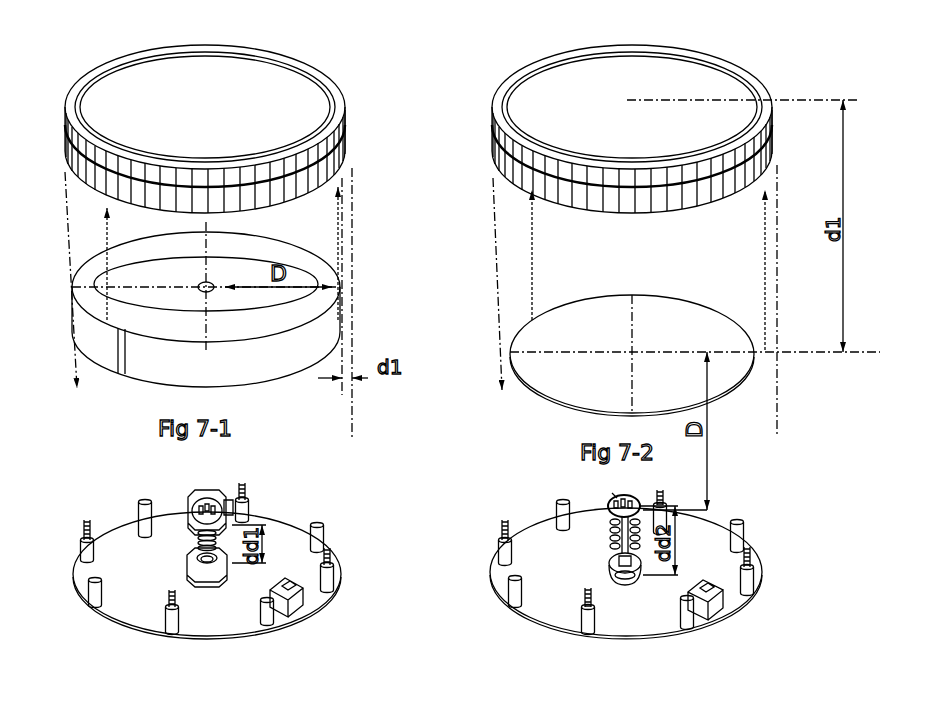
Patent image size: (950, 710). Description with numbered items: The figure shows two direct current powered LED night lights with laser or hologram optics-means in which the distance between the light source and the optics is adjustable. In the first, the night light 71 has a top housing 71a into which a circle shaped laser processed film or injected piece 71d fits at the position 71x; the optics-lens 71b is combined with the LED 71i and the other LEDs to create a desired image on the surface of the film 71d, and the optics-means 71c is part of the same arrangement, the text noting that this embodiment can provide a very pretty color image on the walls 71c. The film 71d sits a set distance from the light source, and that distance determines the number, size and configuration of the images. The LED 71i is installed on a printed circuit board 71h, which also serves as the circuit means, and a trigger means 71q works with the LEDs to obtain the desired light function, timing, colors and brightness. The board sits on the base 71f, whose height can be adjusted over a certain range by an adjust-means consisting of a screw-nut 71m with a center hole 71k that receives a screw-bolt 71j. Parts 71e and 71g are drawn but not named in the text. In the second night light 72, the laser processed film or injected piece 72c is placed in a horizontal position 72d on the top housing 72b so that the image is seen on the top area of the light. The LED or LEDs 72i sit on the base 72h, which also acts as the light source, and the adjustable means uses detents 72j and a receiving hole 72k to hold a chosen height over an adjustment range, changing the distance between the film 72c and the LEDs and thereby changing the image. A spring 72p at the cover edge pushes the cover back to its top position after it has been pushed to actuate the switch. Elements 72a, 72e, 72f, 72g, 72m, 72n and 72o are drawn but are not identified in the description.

In FIG. 7-1, the direct current operated LED night light 71 is at (195, 67).
In FIG. 7-1, the top housing 71a is at (107, 70).
In FIG. 7-1, the optics-lens 71b is at (248, 95).
In FIG. 7-1, the optics-means 71c is at (325, 157).
In FIG. 7-1, the position 71x is at (137, 173).
In FIG. 7-1, the laser processed film or injected piece 71d is at (292, 240).
In FIG. 7-1, the post 71e is at (268, 612).
In FIG. 7-1, the base 71f is at (183, 498).
In FIG. 7-1, the bracket 71g is at (233, 514).
In FIG. 7-1, the printed circuit board 71h is at (208, 495).
In FIG. 7-1, the LED 71i is at (236, 503).
In FIG. 7-1, the screw-bolt 71j is at (192, 545).
In FIG. 7-1, the center hole 71k is at (220, 563).
In FIG. 7-1, the screw-nut 71m is at (192, 572).
In FIG. 7-1, the trigger means 71q is at (300, 603).
In FIG. 7-2, the DC powered night light 72 is at (620, 65).
In FIG. 7-2, the cap rim 72a is at (528, 72).
In FIG. 7-2, the top housing 72b is at (764, 90).
In FIG. 7-2, the laser processed film or injected piece 72c is at (527, 107).
In FIG. 7-2, the horizontal position 72d is at (497, 167).
In FIG. 7-2, the disk 72e is at (757, 368).
In FIG. 7-2, the base plate 72f is at (627, 627).
In FIG. 7-2, the contact head 72g is at (640, 500).
In FIG. 7-2, the base 72h is at (608, 505).
In FIG. 7-2, the LED 72i is at (611, 493).
In FIG. 7-2, the detents 72j is at (646, 523).
In FIG. 7-2, the receiving hole 72k is at (608, 583).
In FIG. 7-2, the cup seat 72m is at (606, 565).
In FIG. 7-2, the post 72n is at (688, 613).
In FIG. 7-2, the switch block 72o is at (713, 605).
In FIG. 7-2, the spring 72p is at (757, 560).